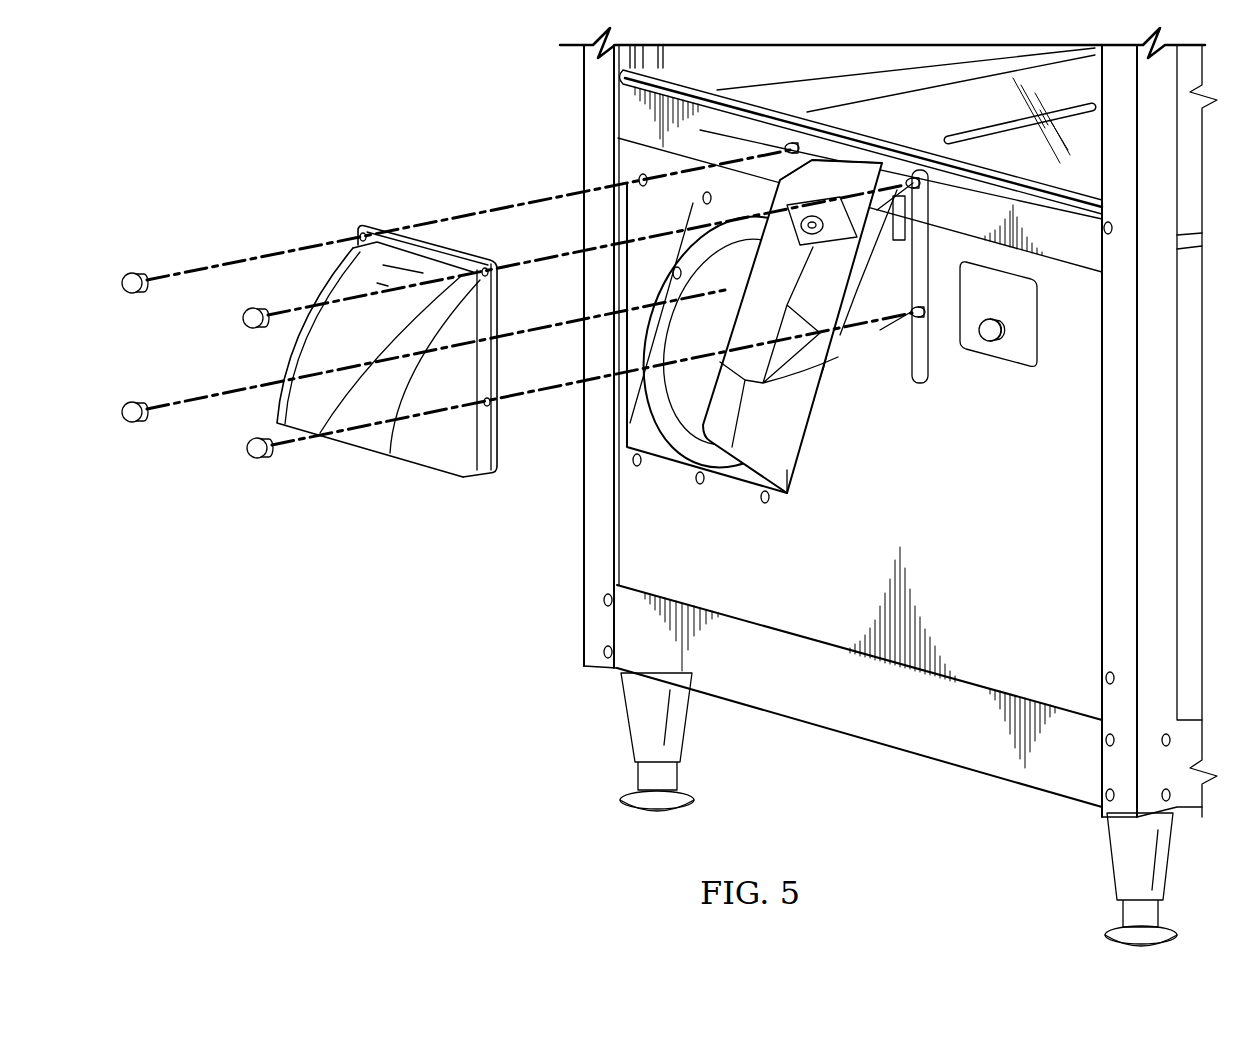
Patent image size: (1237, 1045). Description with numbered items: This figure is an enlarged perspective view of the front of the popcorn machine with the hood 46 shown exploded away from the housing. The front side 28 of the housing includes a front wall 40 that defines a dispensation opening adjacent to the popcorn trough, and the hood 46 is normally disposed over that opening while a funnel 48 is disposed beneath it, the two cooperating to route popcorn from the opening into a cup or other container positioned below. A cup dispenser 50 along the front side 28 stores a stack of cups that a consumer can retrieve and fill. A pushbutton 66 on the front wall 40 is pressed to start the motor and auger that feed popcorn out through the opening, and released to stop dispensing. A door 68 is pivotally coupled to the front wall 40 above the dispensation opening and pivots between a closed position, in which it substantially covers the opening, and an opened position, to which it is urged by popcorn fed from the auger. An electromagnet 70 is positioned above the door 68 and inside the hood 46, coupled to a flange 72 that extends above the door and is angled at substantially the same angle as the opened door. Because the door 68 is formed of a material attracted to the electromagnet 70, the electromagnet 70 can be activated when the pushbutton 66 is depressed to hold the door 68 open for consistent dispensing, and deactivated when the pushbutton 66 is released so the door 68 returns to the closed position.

The front side 28 is at (548, 488).
The front wall 40 is at (797, 620).
The hood 46 is at (437, 450).
The funnel 48 is at (810, 428).
The cup dispenser 50 is at (680, 437).
The pushbutton 66 is at (987, 335).
The door 68 is at (834, 290).
The electromagnet 70 is at (878, 168).
The flange 72 is at (827, 203).